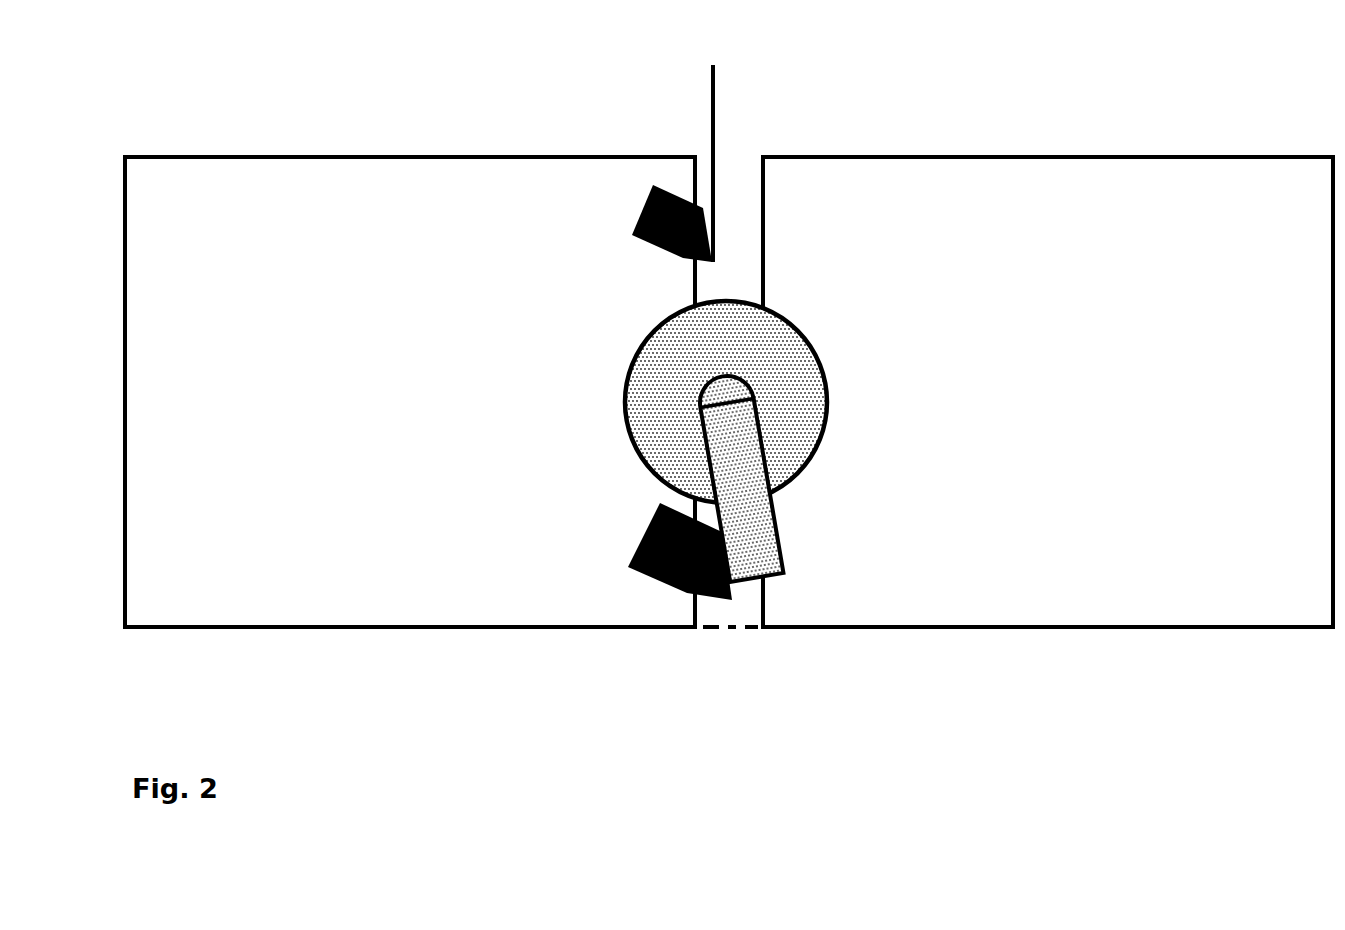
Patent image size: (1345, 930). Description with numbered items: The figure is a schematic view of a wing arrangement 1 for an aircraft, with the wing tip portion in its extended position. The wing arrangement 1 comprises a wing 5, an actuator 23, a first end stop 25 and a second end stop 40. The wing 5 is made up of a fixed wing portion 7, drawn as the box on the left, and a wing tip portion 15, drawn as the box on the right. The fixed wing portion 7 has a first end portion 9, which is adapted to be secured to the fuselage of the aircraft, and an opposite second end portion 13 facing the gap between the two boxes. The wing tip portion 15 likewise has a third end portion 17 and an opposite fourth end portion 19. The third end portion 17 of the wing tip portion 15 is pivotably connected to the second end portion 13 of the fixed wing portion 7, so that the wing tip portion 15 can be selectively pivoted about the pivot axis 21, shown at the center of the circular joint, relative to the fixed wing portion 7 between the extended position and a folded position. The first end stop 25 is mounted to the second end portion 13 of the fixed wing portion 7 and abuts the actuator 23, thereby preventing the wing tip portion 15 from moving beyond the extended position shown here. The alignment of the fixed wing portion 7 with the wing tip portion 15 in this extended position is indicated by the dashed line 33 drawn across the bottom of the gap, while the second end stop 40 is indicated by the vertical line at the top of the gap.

The wing arrangement 1 is at (735, 340).
The wing 5 is at (1048, 340).
The fixed wing portion 7 is at (442, 155).
The first end portion 9 is at (155, 153).
The second end portion 13 is at (557, 153).
The wing tip portion 15 is at (966, 155).
The third end portion 17 is at (886, 152).
The fourth end portion 19 is at (1149, 152).
The pivot axis 21 is at (726, 498).
The actuator 23 is at (728, 170).
The first end stop 25 is at (732, 593).
The dashed line 33 is at (748, 627).
The second end stop 40 is at (709, 146).